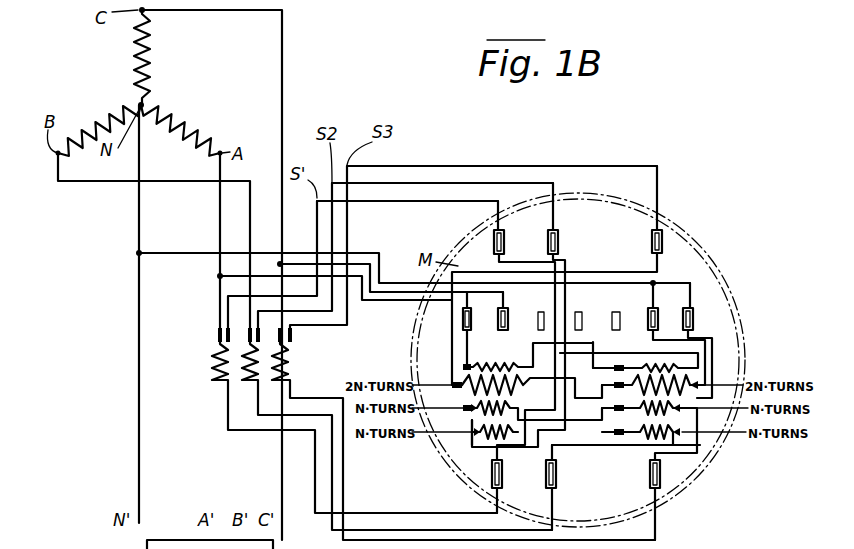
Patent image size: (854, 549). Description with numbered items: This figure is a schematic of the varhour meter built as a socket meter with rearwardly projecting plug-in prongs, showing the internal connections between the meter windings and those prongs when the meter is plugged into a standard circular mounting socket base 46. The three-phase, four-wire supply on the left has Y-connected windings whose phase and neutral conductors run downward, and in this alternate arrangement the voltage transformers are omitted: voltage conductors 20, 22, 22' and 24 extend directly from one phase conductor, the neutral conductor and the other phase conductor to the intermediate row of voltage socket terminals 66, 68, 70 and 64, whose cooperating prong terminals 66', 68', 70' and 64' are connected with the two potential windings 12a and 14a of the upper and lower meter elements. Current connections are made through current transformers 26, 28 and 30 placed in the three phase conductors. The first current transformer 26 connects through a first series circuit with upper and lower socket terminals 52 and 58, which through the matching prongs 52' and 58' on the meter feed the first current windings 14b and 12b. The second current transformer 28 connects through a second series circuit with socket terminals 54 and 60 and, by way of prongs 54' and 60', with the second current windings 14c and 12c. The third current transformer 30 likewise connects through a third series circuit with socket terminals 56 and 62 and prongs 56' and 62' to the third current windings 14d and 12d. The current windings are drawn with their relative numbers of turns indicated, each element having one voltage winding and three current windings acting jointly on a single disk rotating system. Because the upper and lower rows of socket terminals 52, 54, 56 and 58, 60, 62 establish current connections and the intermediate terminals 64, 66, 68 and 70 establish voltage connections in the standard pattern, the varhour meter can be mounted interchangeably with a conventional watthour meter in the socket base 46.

The voltage winding 12a is at (700, 356).
The first current winding 12b is at (698, 382).
The second current winding 12c is at (680, 430).
The third current winding 12d is at (690, 415).
The voltage winding 14a is at (470, 372).
The first current winding 14b is at (478, 406).
The second current winding 14c is at (480, 436).
The third current winding 14d is at (452, 380).
The voltage conductor 20 is at (300, 262).
The voltage conductor 22 is at (413, 254).
The voltage conductor 22' is at (596, 328).
The voltage conductor 24 is at (232, 278).
The current transformer 26 is at (215, 366).
The current transformer 28 is at (248, 372).
The current transformer 30 is at (290, 358).
The socket base 46 is at (458, 247).
The socket terminal 52 is at (505, 330).
The terminal prong 52' is at (483, 247).
The socket terminal 54 is at (531, 315).
The terminal prong 54' is at (575, 240).
The socket terminal 56 is at (557, 275).
The terminal prong 56' is at (639, 243).
The socket terminal 58 is at (473, 486).
The terminal prong 58' is at (464, 479).
The socket terminal 60 is at (571, 487).
The terminal prong 60' is at (572, 472).
The socket terminal 62 is at (626, 492).
The terminal prong 62' is at (634, 472).
The socket terminal 64 is at (479, 330).
The prong terminal 64' is at (449, 322).
The socket terminal 66 is at (514, 310).
The prong terminal 66' is at (490, 332).
The socket terminal 68 is at (665, 332).
The prong terminal 68' is at (639, 327).
The socket terminal 70 is at (699, 340).
The prong terminal 70' is at (706, 324).